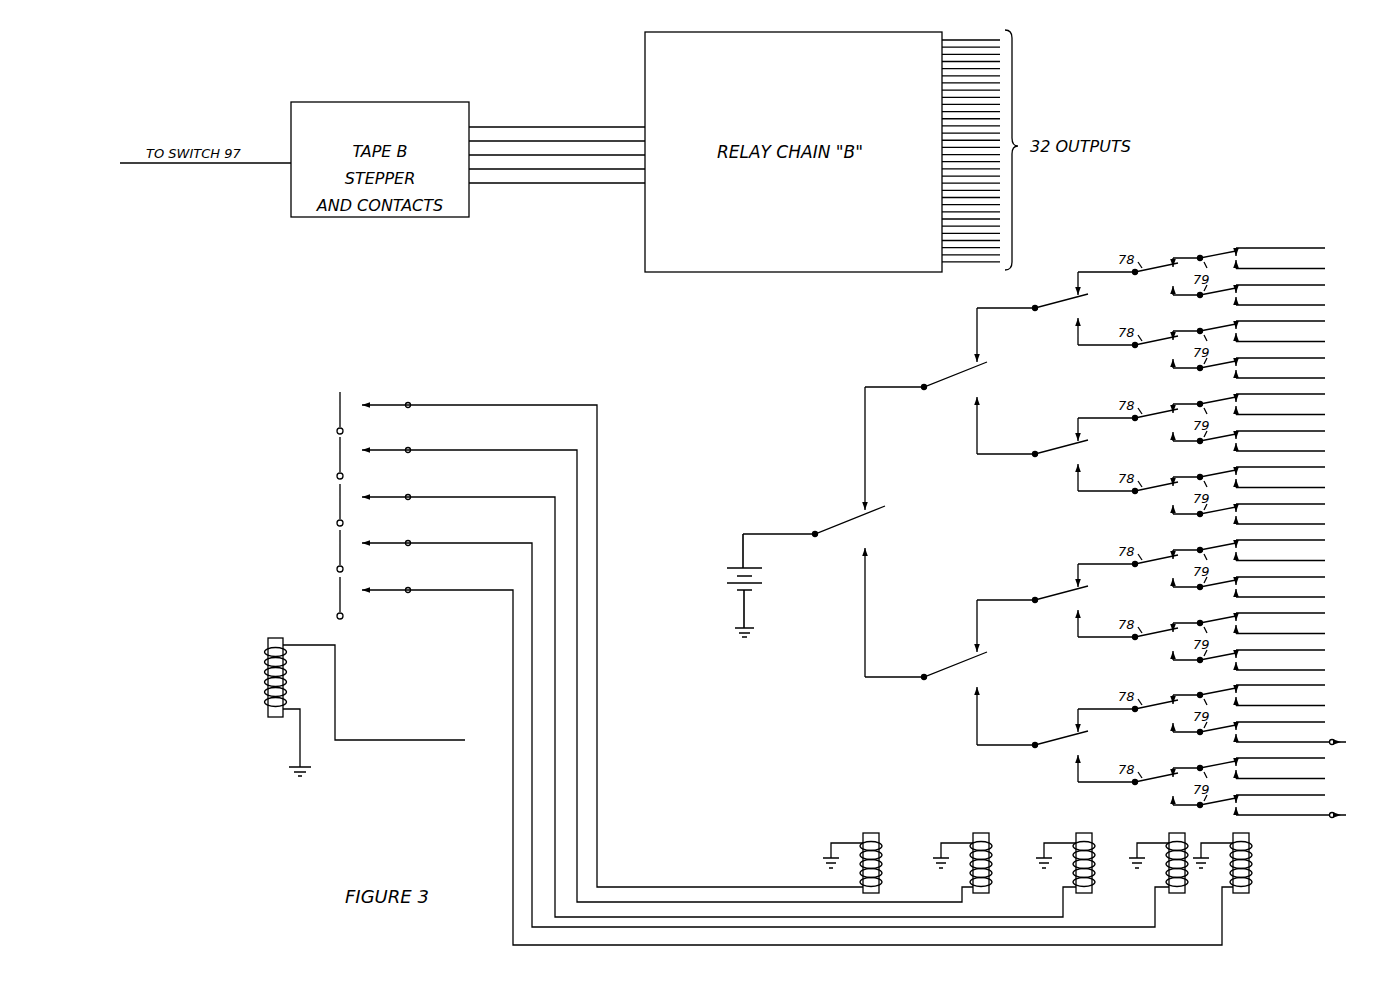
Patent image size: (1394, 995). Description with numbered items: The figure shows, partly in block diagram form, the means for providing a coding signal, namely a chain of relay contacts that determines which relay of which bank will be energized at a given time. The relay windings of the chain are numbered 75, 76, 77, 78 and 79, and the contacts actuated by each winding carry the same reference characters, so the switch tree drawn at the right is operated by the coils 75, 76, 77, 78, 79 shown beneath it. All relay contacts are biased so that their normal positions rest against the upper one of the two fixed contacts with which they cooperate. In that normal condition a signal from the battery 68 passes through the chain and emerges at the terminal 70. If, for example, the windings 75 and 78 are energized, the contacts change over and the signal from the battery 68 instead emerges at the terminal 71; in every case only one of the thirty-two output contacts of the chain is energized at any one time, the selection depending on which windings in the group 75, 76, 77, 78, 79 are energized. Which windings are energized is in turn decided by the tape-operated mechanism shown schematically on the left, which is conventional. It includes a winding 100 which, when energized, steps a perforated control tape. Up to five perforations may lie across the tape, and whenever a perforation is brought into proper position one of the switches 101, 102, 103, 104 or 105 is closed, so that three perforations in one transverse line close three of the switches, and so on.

The battery 68 is at (755, 570).
The terminal 70 is at (1276, 248).
The terminal 71 is at (1310, 575).
The winding 75 is at (815, 533).
The winding 76 is at (922, 676).
The winding 77 is at (1033, 744).
The winding 78 is at (1199, 877).
The winding 79 is at (1249, 866).
The winding 100 is at (265, 670).
The switch 101 is at (350, 585).
The switch 102 is at (350, 538).
The switch 103 is at (350, 492).
The switch 104 is at (350, 445).
The switch 105 is at (350, 400).